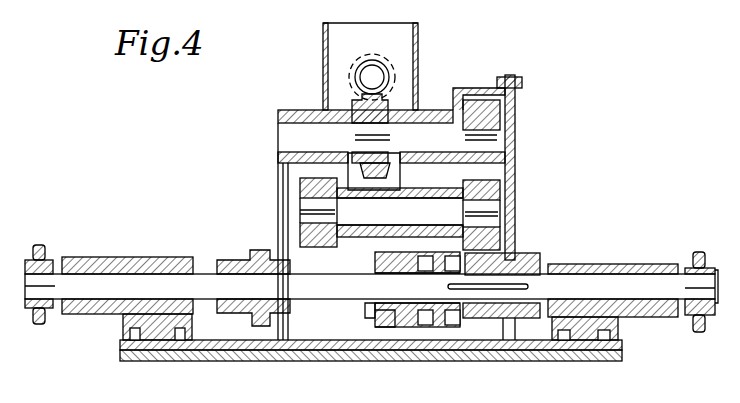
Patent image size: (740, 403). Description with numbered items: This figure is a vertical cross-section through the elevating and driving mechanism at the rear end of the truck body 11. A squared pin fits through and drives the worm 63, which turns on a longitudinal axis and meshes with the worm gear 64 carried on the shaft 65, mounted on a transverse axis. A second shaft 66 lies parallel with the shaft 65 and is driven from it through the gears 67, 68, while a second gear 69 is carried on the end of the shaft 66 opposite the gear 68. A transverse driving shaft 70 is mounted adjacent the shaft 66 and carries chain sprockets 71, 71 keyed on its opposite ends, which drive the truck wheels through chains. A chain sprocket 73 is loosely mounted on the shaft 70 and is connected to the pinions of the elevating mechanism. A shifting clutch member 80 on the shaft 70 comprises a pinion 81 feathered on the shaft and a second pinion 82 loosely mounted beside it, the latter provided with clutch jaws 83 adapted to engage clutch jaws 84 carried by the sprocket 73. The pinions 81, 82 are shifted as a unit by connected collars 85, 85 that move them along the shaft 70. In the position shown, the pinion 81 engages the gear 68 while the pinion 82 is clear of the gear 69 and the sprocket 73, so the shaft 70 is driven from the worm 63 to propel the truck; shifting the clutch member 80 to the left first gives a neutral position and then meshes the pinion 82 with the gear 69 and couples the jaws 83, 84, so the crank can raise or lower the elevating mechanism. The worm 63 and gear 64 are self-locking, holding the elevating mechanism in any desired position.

The truck body 11 is at (578, 358).
The worm 63 is at (386, 74).
The worm gear 64 is at (352, 108).
The shaft 65 is at (283, 137).
The second shaft 66 is at (487, 218).
The gear 67 is at (500, 112).
The gear 68 is at (497, 190).
The second gear 69 is at (300, 186).
The transverse driving shaft 70 is at (598, 288).
The chain sprockets 71 is at (40, 245).
The chain sprocket 73 is at (255, 252).
The shifting clutch member 80 is at (440, 322).
The pinion 81 is at (520, 265).
The second pinion 82 is at (398, 312).
The clutch jaws 83 is at (365, 305).
The clutch jaws 84 is at (283, 250).
The collars 85 is at (425, 320).